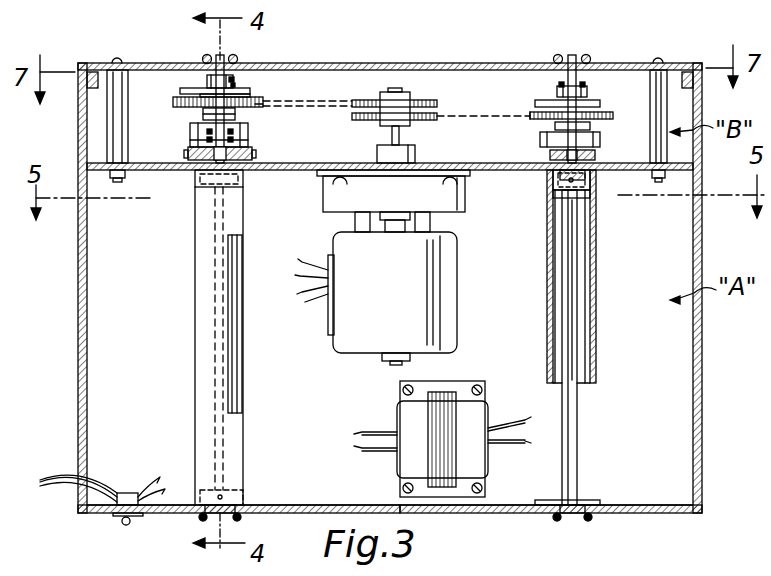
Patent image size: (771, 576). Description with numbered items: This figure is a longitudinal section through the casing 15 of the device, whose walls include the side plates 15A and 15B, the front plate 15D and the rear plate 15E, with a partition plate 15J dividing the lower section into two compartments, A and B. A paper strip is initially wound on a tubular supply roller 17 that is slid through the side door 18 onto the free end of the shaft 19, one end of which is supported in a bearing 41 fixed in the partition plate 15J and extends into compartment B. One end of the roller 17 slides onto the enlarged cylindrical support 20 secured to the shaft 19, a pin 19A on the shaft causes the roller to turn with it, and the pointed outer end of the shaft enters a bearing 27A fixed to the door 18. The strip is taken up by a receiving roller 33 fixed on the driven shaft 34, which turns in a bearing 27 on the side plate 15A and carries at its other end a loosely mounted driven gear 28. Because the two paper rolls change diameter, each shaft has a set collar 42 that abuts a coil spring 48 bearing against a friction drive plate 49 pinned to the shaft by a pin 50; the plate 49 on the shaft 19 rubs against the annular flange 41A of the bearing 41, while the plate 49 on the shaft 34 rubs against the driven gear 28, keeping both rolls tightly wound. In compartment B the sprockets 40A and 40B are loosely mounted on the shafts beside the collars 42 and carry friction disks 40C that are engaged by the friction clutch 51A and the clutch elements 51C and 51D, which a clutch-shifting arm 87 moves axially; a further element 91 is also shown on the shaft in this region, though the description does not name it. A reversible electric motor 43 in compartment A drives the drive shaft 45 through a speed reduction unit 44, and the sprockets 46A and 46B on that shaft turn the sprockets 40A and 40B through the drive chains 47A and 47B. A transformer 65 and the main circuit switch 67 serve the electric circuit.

The casing 15 is at (680, 518).
The side plate 15A is at (180, 513).
The side plate 15B is at (430, 45).
The front plate 15D is at (702, 382).
The rear plate 15E is at (78, 330).
The partition plate 15J is at (520, 172).
The supply roller 17 is at (596, 262).
The side door 18 is at (480, 512).
The shaft 19 is at (568, 76).
The pin 19A is at (576, 495).
The cylindrical support 20 is at (553, 204).
The bearing 27 is at (207, 58).
The bearing 27A is at (577, 519).
The driven gear 28 is at (188, 154).
The receiving roller 33 is at (195, 341).
The driven shaft 34 is at (222, 60).
The sprocket 40A is at (265, 108).
The sprocket 40B is at (531, 117).
The friction disk 40C is at (178, 102).
The bearing 41 is at (553, 180).
The annular flange 41A is at (560, 163).
The set collar 42 is at (203, 114).
The reversible electric motor 43 is at (417, 296).
The speed reduction unit 44 is at (330, 196).
The drive shaft 45 is at (392, 138).
The sprocket 46A is at (384, 102).
The sprocket 46B is at (420, 116).
The drive chain 47A is at (307, 103).
The drive chain 47B is at (490, 116).
The coil spring 48 is at (190, 131).
The friction drive plate 49 is at (595, 153).
The pin 50 is at (236, 136).
The friction clutch 51A is at (250, 94).
The clutch element 51C is at (181, 91).
The clutch element 51D is at (207, 81).
The transformer 65 is at (473, 415).
The main circuit switch 67 is at (124, 523).
The clutch-shifting arm 87 is at (236, 80).
The pin 91 is at (588, 91).